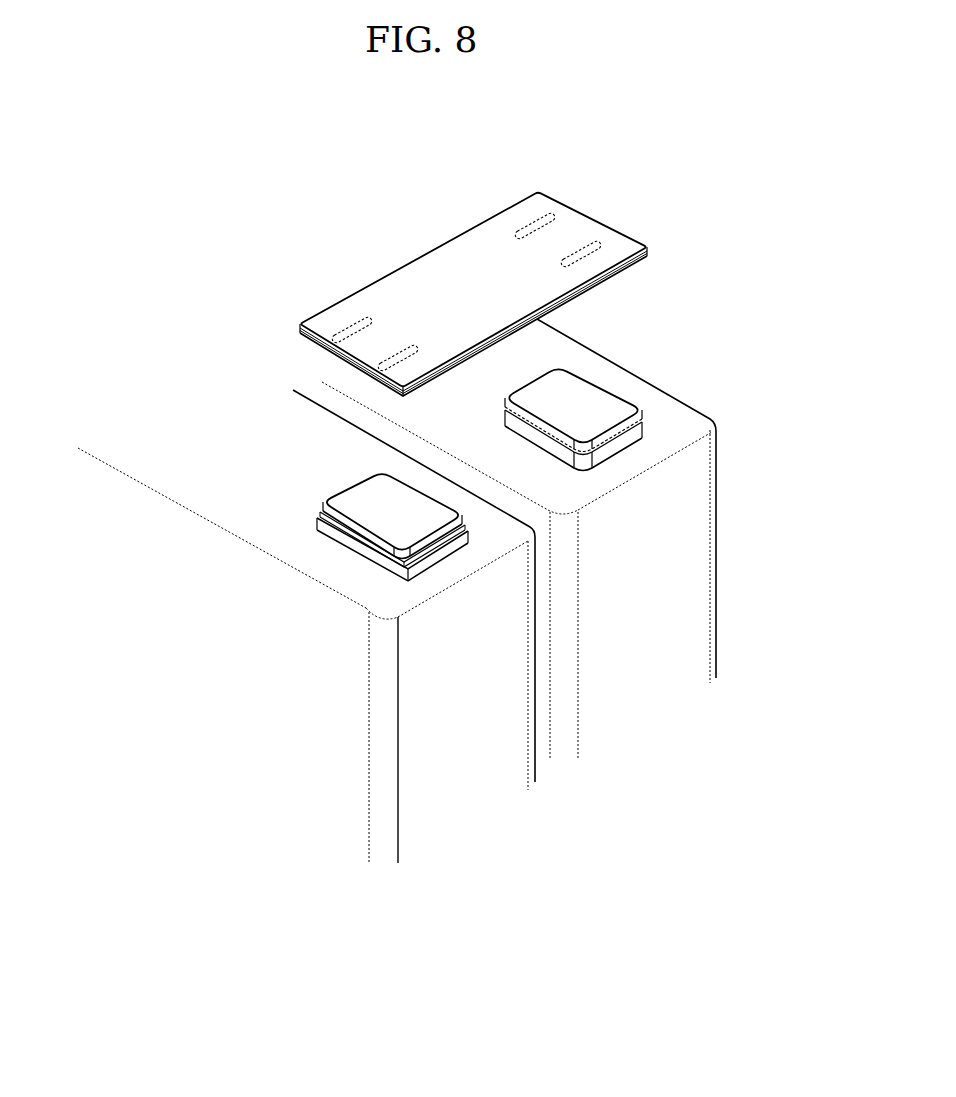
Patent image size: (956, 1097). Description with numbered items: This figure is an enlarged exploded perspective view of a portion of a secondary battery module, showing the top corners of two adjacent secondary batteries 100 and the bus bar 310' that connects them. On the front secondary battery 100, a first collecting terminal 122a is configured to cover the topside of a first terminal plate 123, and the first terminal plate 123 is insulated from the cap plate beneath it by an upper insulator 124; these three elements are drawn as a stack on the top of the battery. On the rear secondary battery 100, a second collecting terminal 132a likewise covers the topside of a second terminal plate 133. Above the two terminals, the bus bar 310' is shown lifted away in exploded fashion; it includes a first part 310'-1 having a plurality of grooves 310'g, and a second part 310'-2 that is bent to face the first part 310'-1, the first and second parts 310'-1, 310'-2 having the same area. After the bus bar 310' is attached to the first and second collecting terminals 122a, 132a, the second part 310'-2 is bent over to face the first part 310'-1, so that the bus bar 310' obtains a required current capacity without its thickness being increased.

The secondary battery 100 is at (697, 543).
The first collecting terminal 122a is at (353, 515).
The first terminal plate 123 is at (375, 548).
The upper insulator 124 is at (433, 558).
The second collecting terminal 132a is at (607, 393).
The second terminal plate 133 is at (632, 440).
The bus bar 310' is at (389, 266).
The first part 310'-1 is at (421, 325).
The second part 310'-2 is at (421, 294).
The groove 310'g is at (466, 254).